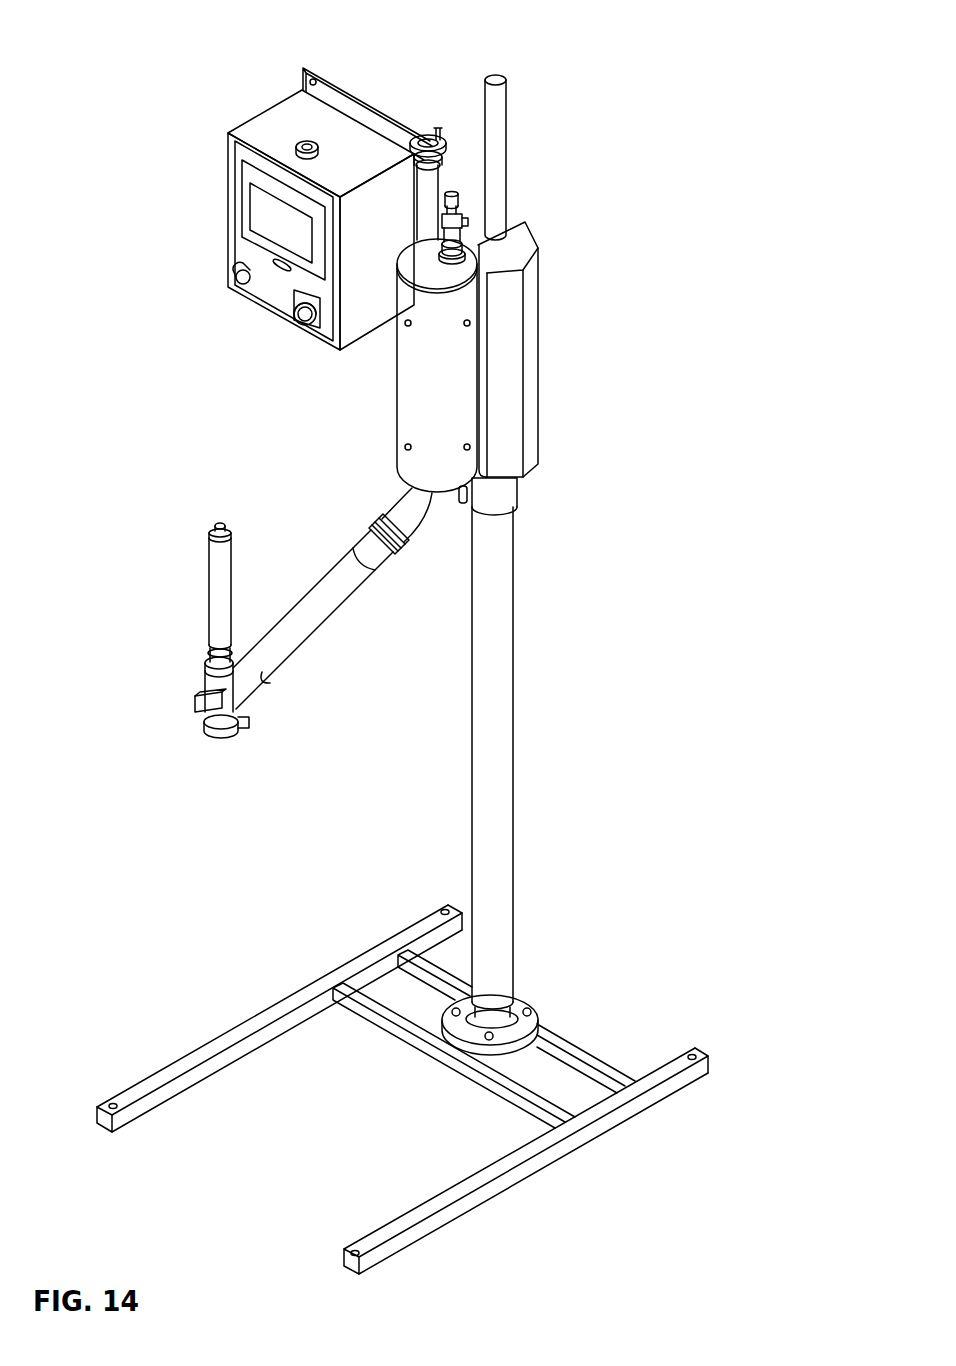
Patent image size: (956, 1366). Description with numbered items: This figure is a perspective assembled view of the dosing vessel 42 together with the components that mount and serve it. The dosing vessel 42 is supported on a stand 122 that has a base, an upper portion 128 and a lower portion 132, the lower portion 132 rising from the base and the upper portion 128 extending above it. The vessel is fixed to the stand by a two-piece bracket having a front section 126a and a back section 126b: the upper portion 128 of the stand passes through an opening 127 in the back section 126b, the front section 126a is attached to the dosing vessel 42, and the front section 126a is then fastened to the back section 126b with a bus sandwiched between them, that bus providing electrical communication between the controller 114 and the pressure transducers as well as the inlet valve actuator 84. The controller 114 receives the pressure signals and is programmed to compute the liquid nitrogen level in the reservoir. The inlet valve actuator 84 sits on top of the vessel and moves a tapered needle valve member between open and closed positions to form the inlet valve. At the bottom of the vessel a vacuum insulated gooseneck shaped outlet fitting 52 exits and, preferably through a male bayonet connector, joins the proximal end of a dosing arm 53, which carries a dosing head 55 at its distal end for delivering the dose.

The controller 114 is at (256, 114).
The inlet valve actuator 84 is at (452, 190).
The upper portion 128 is at (508, 107).
The opening 127 is at (512, 224).
The back section 126b is at (537, 378).
The dosing vessel 42 is at (395, 408).
The outlet fitting 52 is at (397, 505).
The front section 126a is at (445, 497).
The dosing arm 53 is at (293, 647).
The dosing head 55 is at (200, 680).
The stand 122 is at (548, 664).
The lower portion 132 is at (513, 772).